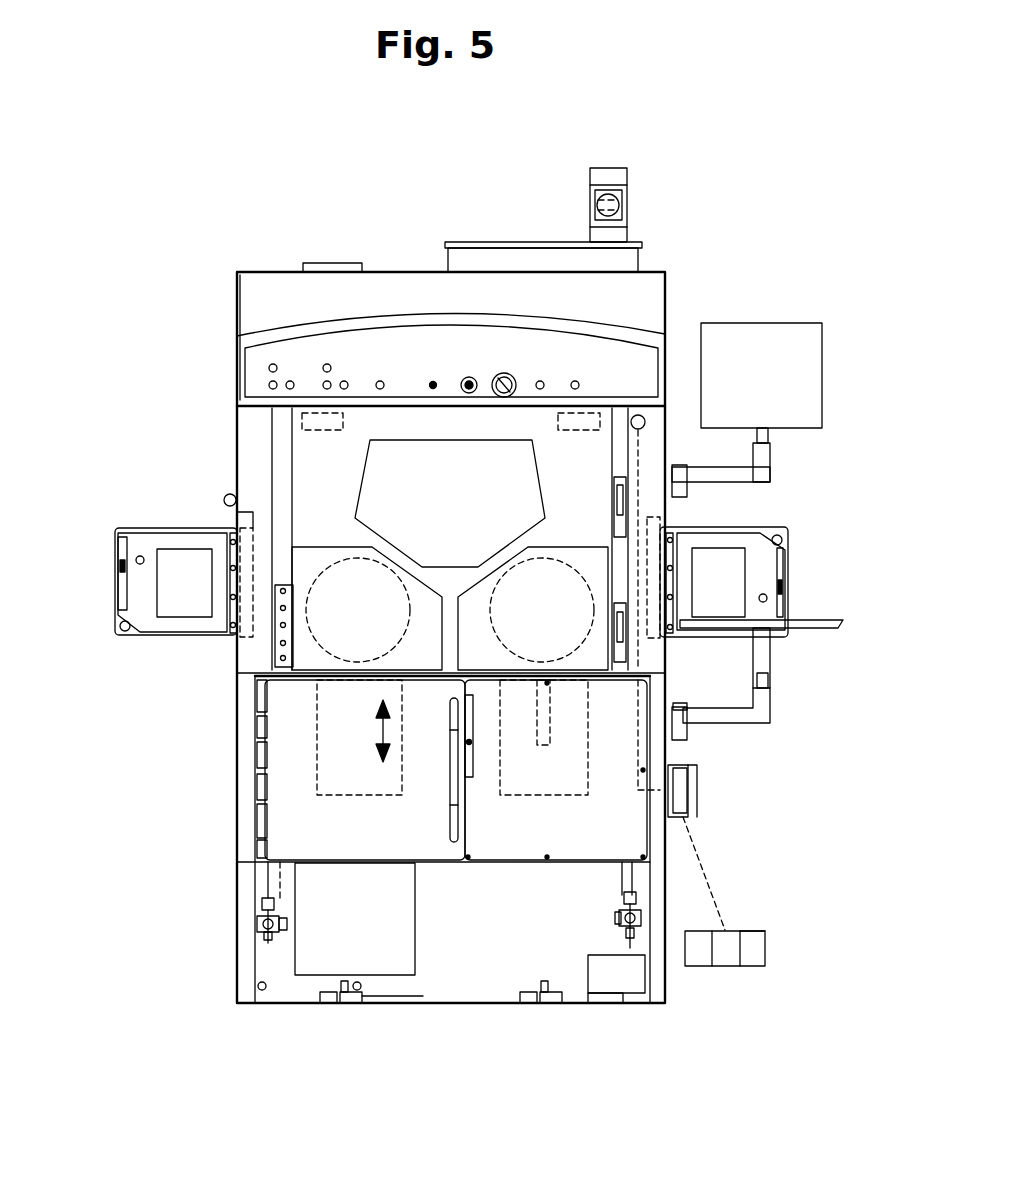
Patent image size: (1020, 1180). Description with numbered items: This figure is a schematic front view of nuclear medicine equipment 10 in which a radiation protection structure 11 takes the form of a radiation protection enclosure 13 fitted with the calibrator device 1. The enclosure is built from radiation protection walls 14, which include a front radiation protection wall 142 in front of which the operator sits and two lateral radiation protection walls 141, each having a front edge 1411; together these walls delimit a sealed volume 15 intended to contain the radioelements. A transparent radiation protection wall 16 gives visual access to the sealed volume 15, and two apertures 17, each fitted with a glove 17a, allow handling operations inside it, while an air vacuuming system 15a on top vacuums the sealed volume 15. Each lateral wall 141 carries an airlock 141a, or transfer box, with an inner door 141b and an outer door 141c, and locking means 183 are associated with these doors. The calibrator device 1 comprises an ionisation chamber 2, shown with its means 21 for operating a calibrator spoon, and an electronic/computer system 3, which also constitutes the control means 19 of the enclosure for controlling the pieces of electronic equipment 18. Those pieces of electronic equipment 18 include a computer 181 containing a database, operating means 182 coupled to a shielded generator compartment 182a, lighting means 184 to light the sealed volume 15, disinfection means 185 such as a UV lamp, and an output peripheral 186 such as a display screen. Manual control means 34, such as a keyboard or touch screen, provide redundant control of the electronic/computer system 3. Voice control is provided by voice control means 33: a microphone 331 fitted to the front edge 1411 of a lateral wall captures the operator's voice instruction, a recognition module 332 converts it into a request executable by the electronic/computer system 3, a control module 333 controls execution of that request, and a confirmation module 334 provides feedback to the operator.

The nuclear medicine equipment 10 is at (504, 584).
The radiation protection structure 11 is at (504, 584).
The radiation protection enclosure 13 is at (665, 272).
The front radiation protection wall 142 is at (258, 285).
The air vacuuming system 15a is at (612, 175).
The manual control means 34 is at (468, 378).
The lighting means 184 is at (580, 420).
The disinfection means 185 is at (302, 422).
The microphone 331 is at (645, 422).
The output peripheral 186 is at (800, 345).
The sealed volume 15 is at (337, 503).
The transparent radiation protection wall 16 is at (390, 470).
The radiation protection walls 14 is at (512, 412).
The lateral radiation protection walls 141 is at (512, 412).
The front edge 1411 is at (655, 450).
The airlock 141a is at (459, 598).
The outer door 141c is at (760, 583).
The locking means 183 is at (140, 556).
The inner door 141b is at (250, 520).
The aperture 17 is at (519, 680).
The glove 17a is at (660, 668).
The means for operating a calibrator spoon 21 is at (548, 710).
The piece of electronic equipment 18 is at (612, 770).
The calibrator device 1 is at (612, 770).
The ionisation chamber 2 is at (578, 757).
The operating means 182 is at (291, 770).
The shielded generator compartment 182a is at (330, 748).
The control means 19 is at (751, 847).
The electronic/computer system 3 is at (751, 847).
The computer 181 is at (685, 785).
The voice control means 33 is at (746, 962).
The recognition module 332 is at (697, 962).
The control module 333 is at (730, 960).
The confirmation module 334 is at (748, 938).